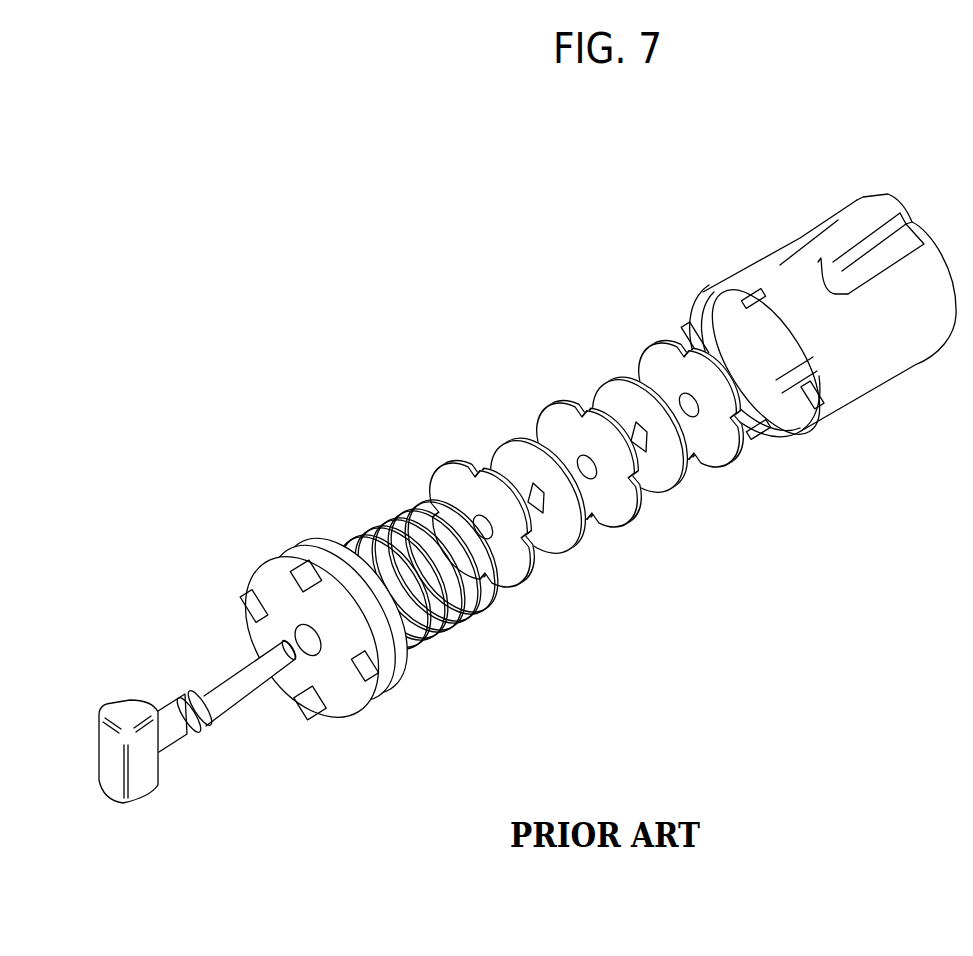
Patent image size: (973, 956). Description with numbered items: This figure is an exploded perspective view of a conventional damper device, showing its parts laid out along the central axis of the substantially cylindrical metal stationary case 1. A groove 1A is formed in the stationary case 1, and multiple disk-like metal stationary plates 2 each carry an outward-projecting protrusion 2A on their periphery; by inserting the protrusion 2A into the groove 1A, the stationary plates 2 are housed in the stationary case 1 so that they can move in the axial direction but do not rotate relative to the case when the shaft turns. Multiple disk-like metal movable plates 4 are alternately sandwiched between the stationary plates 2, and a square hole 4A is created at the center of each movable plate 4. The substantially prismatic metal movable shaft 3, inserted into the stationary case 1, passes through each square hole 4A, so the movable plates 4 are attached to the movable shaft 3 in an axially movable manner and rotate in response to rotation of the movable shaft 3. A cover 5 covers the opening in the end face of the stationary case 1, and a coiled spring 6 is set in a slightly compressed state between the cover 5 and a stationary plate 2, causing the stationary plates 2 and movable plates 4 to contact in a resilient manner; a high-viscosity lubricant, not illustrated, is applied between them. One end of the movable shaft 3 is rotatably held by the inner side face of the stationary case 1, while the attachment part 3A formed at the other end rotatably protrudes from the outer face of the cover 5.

The stationary case 1 is at (855, 393).
The groove 1A is at (843, 232).
The stationary plate 2 is at (548, 425).
The protrusion 2A is at (580, 407).
The movable shaft 3 is at (237, 700).
The attachment part 3A is at (123, 710).
The movable plate 4 is at (663, 480).
The square hole 4A is at (540, 512).
The cover 5 is at (267, 580).
The coiled spring 6 is at (388, 526).